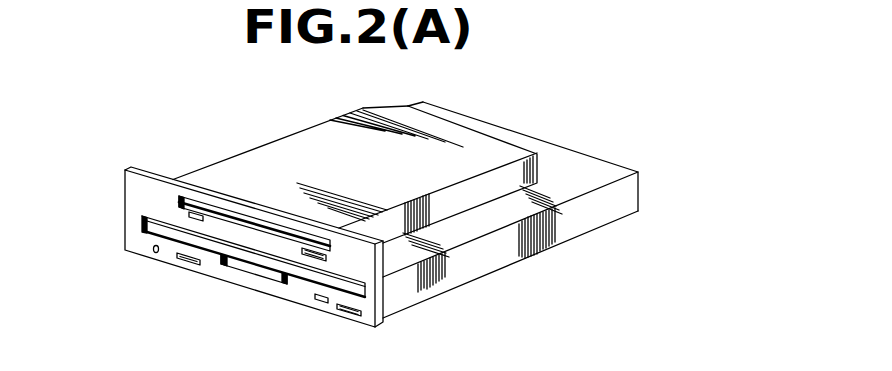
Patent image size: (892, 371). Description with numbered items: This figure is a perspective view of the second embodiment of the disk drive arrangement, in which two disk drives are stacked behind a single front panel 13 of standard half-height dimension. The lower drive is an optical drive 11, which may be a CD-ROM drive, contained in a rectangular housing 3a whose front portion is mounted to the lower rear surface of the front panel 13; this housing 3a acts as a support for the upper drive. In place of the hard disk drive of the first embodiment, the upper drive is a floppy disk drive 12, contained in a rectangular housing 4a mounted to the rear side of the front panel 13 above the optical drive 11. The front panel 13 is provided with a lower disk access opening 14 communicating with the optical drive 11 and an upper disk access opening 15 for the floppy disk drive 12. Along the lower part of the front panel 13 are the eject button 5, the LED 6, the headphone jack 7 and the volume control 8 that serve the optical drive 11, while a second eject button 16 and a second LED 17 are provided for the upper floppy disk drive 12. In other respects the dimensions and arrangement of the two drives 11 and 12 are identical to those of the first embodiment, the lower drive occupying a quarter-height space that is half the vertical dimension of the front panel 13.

The rectangular housing 3a is at (640, 192).
The rectangular housing 4a is at (363, 108).
The eject button 5 is at (345, 316).
The LED 6 is at (316, 302).
The headphone jack 7 is at (153, 252).
The volume control 8 is at (188, 264).
The optical drive 11 is at (590, 175).
The floppy disk drive 12 is at (313, 143).
The front panel 13 is at (126, 194).
The lower disk access opening 14 is at (143, 228).
The upper disk access opening 15 is at (186, 200).
The second eject button 16 is at (303, 256).
The second LED 17 is at (197, 212).